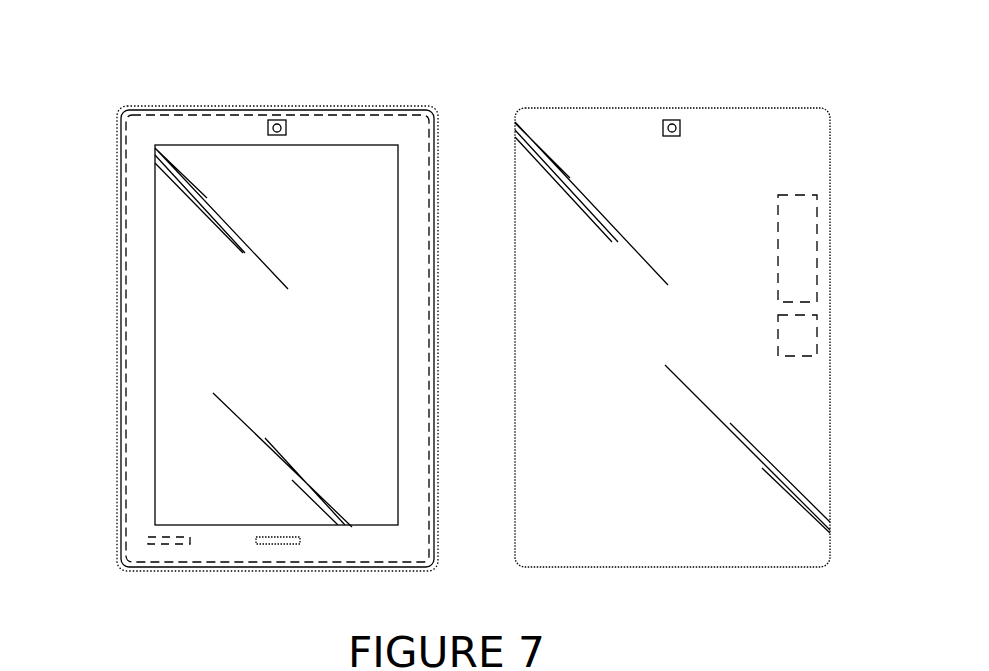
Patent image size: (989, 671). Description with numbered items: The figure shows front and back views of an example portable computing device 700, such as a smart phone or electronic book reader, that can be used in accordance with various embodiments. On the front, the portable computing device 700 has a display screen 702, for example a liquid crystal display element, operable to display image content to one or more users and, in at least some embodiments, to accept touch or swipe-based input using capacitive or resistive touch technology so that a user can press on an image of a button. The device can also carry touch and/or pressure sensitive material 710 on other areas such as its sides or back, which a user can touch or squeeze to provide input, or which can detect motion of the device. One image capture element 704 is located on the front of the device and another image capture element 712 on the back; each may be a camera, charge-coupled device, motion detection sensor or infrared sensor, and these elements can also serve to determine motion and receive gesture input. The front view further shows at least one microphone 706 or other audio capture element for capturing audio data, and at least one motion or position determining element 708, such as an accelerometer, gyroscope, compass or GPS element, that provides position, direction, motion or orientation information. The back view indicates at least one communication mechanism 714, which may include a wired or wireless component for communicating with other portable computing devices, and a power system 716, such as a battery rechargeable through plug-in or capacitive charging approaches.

The portable computing device 700 is at (182, 58).
The display screen 702 is at (155, 222).
The image capture element 704 is at (278, 120).
The microphone 706 is at (277, 544).
The motion or position determining element 708 is at (168, 545).
The touch and/or pressure sensitive material 710 is at (120, 333).
The image capture element 712 is at (672, 120).
The communication mechanism 714 is at (814, 248).
The power system 716 is at (815, 336).